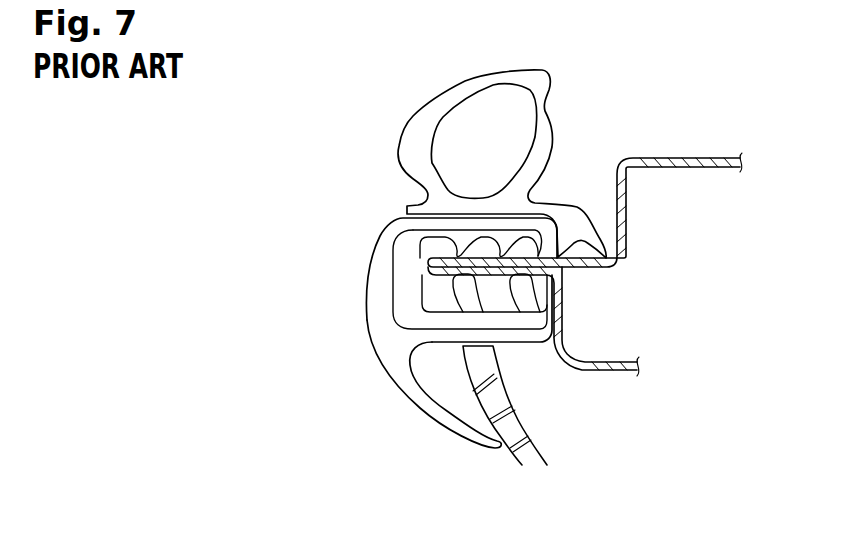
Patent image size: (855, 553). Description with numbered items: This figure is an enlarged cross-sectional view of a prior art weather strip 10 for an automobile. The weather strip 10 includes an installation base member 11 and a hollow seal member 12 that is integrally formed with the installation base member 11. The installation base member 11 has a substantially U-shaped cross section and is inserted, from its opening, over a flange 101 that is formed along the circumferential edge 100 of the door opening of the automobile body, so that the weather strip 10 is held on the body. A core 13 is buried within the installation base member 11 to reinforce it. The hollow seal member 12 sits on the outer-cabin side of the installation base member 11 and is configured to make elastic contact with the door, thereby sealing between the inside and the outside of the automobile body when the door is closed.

The weather strip 10 is at (593, 81).
The installation base member 11 is at (444, 343).
The hollow seal member 12 is at (551, 150).
The core 13 is at (393, 283).
The circumferential edge 100 is at (628, 194).
The flange 101 is at (487, 275).